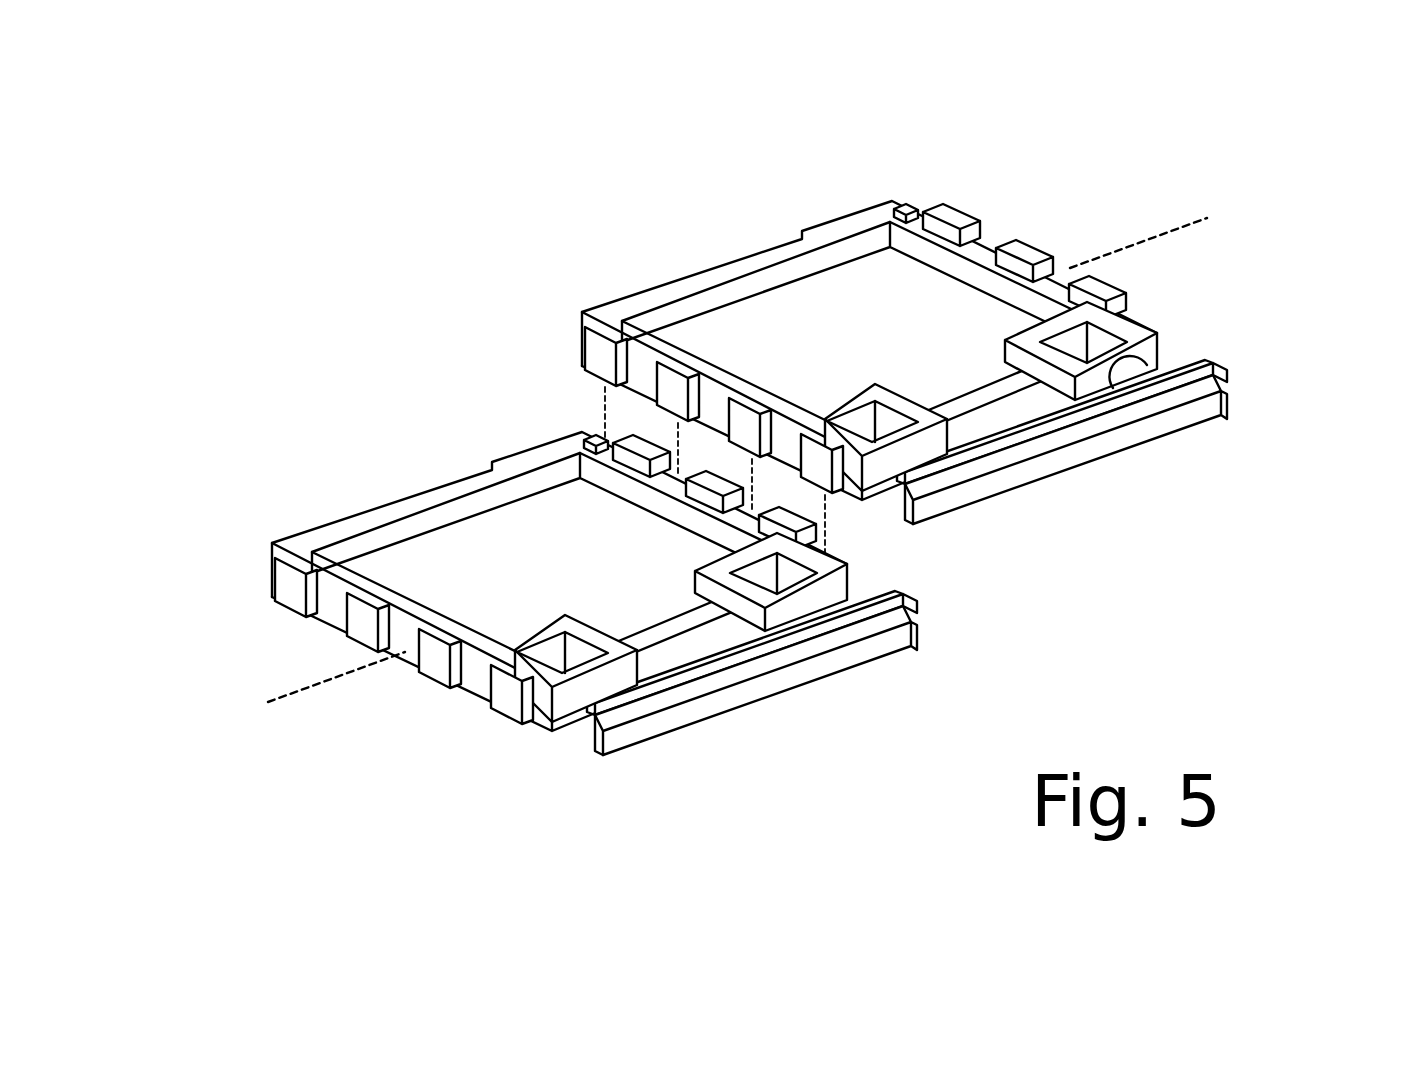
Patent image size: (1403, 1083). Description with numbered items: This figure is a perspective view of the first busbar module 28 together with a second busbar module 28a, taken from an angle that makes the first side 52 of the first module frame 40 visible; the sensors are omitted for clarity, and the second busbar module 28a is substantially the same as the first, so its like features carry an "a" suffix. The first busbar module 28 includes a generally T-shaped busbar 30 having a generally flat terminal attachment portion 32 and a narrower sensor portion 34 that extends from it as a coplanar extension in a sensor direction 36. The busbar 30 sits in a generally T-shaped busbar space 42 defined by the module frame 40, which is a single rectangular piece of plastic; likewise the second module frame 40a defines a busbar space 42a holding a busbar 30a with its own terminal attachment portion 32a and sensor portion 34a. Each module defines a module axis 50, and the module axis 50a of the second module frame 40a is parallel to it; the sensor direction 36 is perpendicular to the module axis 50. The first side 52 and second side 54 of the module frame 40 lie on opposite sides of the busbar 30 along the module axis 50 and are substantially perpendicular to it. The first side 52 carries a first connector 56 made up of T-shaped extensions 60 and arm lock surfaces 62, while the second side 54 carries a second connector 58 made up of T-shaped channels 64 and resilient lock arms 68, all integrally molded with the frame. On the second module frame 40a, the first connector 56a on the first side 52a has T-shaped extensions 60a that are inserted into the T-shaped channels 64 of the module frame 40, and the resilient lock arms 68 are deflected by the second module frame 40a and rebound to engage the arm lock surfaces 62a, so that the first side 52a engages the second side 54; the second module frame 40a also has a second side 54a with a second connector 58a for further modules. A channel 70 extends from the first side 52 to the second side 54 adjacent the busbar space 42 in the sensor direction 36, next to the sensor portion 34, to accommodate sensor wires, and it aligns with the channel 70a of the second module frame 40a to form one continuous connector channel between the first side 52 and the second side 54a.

The first busbar module 28 is at (268, 373).
The second busbar module 28a is at (639, 178).
The busbar 30 is at (491, 598).
The busbar 30a is at (798, 354).
The terminal attachment portion 32 is at (516, 528).
The terminal attachment portion 32a is at (798, 305).
The sensor portion 34 is at (690, 640).
The sensor portion 34a is at (1010, 407).
The sensor direction 36 is at (815, 726).
The first module frame 40 is at (308, 526).
The second module frame 40a is at (590, 305).
The busbar space 42 is at (417, 541).
The busbar space 42a is at (751, 323).
The module axis 50 is at (306, 695).
The module axis 50a is at (1173, 231).
The first side 52 is at (405, 652).
The first side 52a is at (640, 355).
The second side 54 is at (690, 527).
The second side 54a is at (1010, 295).
The first connector 56 is at (217, 561).
The first connector 56a is at (533, 326).
The second connector 58 is at (879, 572).
The second connector 58a is at (1177, 327).
The T-shaped extensions 60 is at (298, 590).
The T-shaped extensions 60a is at (602, 356).
The arm lock surfaces 62 is at (330, 600).
The arm lock surfaces 62a is at (793, 410).
The T-shaped channels 64 is at (590, 434).
The resilient lock arms 68 is at (797, 533).
The channel 70 is at (577, 726).
The channel 70a is at (1133, 362).